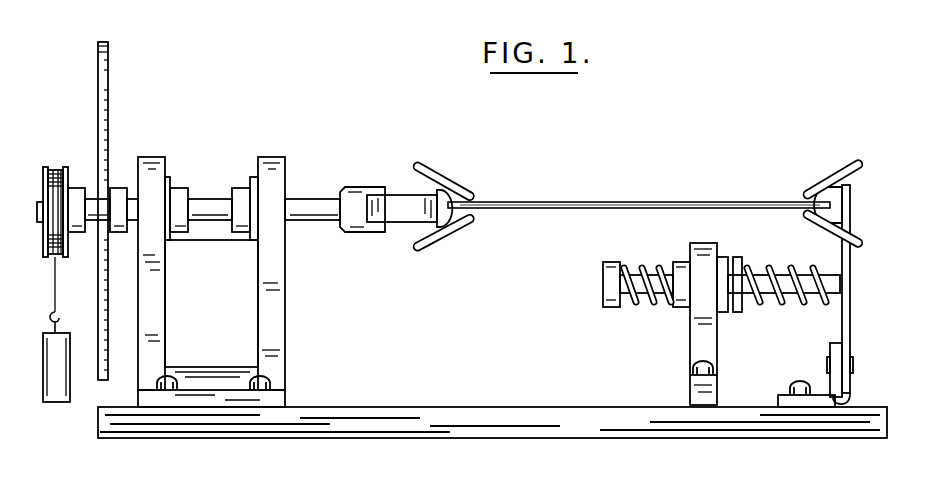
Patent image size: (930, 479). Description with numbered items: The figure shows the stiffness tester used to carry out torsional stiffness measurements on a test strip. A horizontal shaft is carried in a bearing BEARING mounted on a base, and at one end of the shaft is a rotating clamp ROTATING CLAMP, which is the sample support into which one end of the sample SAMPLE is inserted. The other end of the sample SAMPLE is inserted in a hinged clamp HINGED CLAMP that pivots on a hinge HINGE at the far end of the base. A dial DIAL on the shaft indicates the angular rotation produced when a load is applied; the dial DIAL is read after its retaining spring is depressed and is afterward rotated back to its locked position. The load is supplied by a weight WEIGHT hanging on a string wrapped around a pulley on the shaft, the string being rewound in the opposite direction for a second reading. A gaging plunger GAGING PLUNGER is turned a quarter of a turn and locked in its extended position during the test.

The dial DIAL is at (105, 82).
The bearing BEARING is at (238, 193).
The rotating clamp ROTATING CLAMP is at (440, 180).
The sample SAMPLE is at (610, 202).
The hinged clamp HINGED CLAMP is at (837, 175).
The gaging plunger GAGING PLUNGER is at (607, 283).
The hinge HINGE is at (837, 377).
The weight WEIGHT is at (50, 390).